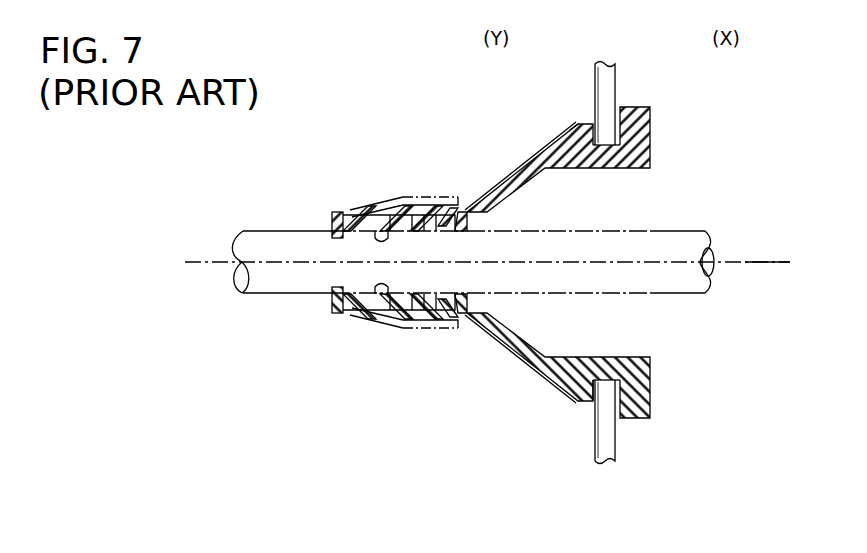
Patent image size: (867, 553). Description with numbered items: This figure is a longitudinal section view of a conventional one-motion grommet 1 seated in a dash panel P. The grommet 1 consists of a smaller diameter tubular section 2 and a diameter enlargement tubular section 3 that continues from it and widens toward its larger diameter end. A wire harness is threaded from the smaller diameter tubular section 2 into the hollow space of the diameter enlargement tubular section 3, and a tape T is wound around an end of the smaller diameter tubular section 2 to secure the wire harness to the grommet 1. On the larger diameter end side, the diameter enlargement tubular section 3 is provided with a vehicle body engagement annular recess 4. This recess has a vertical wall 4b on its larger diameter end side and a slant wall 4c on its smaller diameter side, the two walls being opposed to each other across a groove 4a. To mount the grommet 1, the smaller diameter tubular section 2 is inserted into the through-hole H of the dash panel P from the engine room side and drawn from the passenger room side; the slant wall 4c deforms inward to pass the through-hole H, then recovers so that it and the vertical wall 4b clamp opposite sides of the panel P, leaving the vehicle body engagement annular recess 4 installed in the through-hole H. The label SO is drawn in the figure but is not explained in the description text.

The grommet 1 is at (543, 246).
The smaller diameter tubular section 2 is at (395, 268).
The diameter enlargement tubular section 3 is at (494, 190).
The vehicle body engagement annular recess 4 is at (626, 222).
The groove 4a is at (616, 142).
The vertical wall 4b is at (640, 108).
The slant wall 4c is at (577, 122).
The tape T is at (421, 197).
The dash panel P is at (588, 425).
The through-hole H is at (608, 370).
The axis / shield SO is at (748, 262).